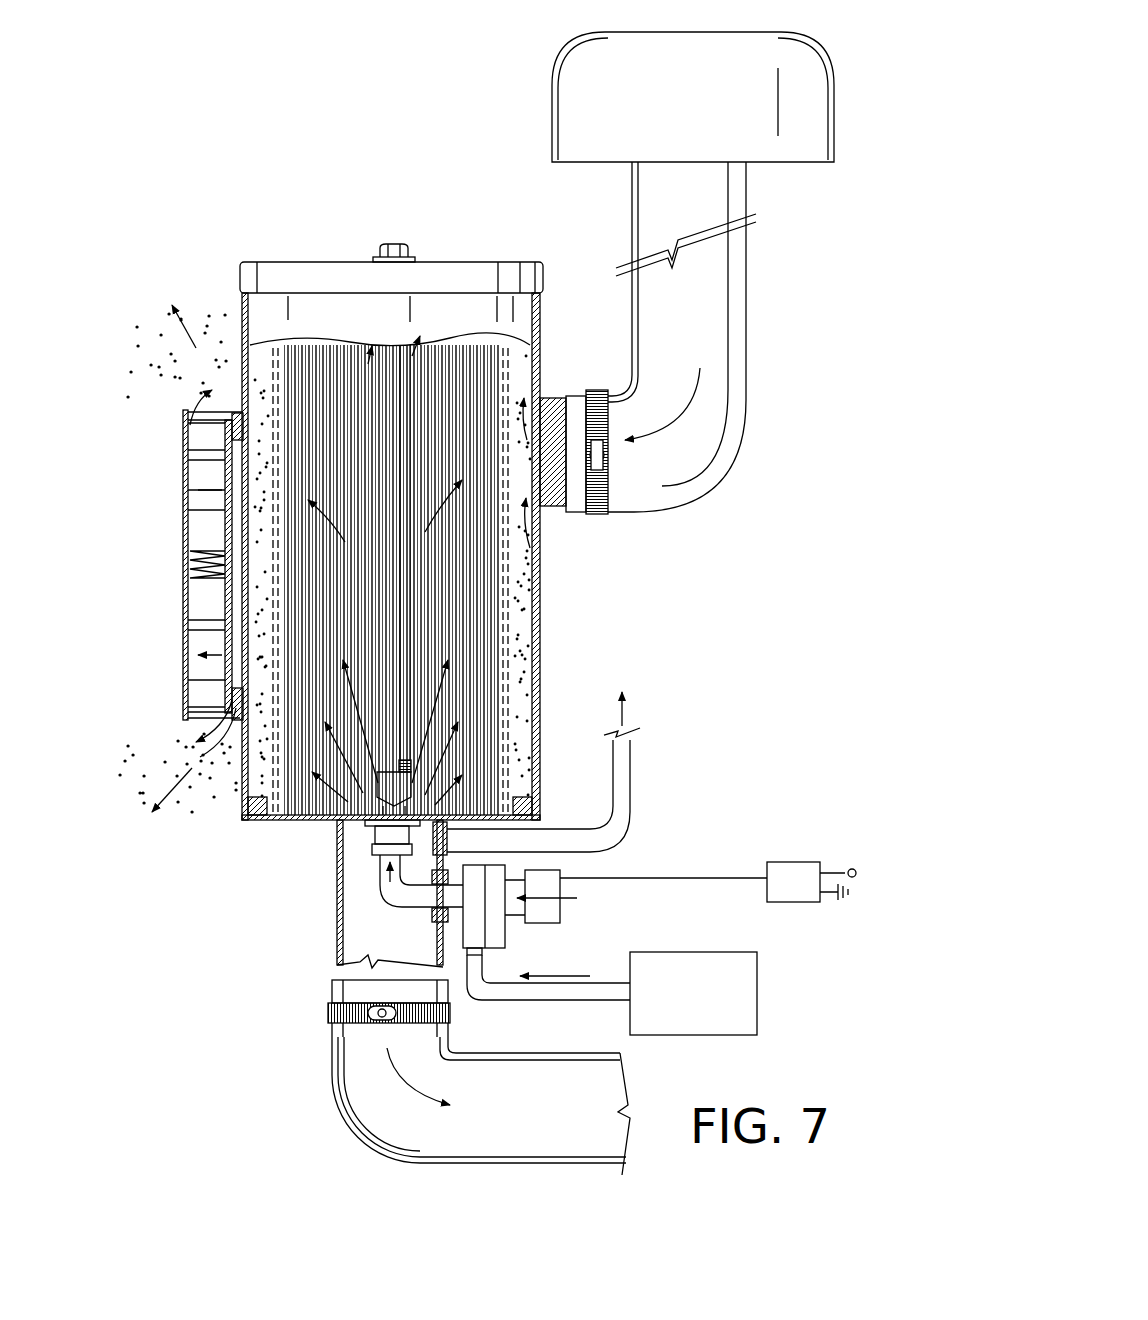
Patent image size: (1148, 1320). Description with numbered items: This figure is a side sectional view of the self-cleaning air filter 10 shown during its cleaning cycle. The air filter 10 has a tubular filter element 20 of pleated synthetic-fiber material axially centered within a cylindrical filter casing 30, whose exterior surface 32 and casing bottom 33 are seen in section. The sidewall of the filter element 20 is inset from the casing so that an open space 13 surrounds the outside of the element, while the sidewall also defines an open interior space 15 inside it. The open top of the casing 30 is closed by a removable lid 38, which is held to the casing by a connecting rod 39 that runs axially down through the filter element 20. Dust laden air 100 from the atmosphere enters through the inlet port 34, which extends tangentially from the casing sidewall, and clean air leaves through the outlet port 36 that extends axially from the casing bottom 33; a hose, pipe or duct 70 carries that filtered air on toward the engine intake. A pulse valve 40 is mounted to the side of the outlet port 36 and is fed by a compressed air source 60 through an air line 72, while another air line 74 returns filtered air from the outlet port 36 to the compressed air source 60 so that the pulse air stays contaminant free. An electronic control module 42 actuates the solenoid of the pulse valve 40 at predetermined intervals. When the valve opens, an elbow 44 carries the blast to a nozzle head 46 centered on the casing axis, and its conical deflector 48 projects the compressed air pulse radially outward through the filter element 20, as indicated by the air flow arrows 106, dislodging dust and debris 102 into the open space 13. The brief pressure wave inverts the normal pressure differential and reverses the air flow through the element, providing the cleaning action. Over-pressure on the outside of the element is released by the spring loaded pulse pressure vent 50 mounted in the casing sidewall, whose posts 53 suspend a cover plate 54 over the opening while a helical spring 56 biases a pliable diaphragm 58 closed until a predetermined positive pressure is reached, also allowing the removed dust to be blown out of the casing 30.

The self-cleaning air filter 10 is at (290, 185).
The open space 13 is at (258, 787).
The open interior space 15 is at (440, 360).
The tubular filter element 20 is at (461, 620).
The cylindrical filter casing 30 is at (272, 258).
The exterior surface 32 is at (538, 553).
The casing bottom 33 is at (256, 822).
The inlet port 34 is at (548, 424).
The outlet port 36 is at (338, 933).
The removable lid 38 is at (512, 268).
The connecting rod 39 is at (393, 607).
The pulse valve 40 is at (542, 917).
The electronic control module 42 is at (793, 872).
The elbow 44 is at (420, 903).
The nozzle head 46 is at (370, 838).
The conical deflector 48 is at (403, 800).
The spring loaded pulse pressure vent 50 is at (178, 644).
The spacers or posts 53 is at (192, 736).
The cover plate 54 is at (183, 482).
The helical spring 56 is at (195, 557).
The pliable diaphragm 58 is at (222, 600).
The compressed air source 60 is at (762, 992).
The hose, pipe or duct 70 is at (367, 1117).
The air line 72 is at (577, 1004).
The air line 74 is at (576, 846).
The dust laden air 100 is at (690, 422).
The dust and debris 102 is at (150, 385).
The air flow 106 is at (365, 524).